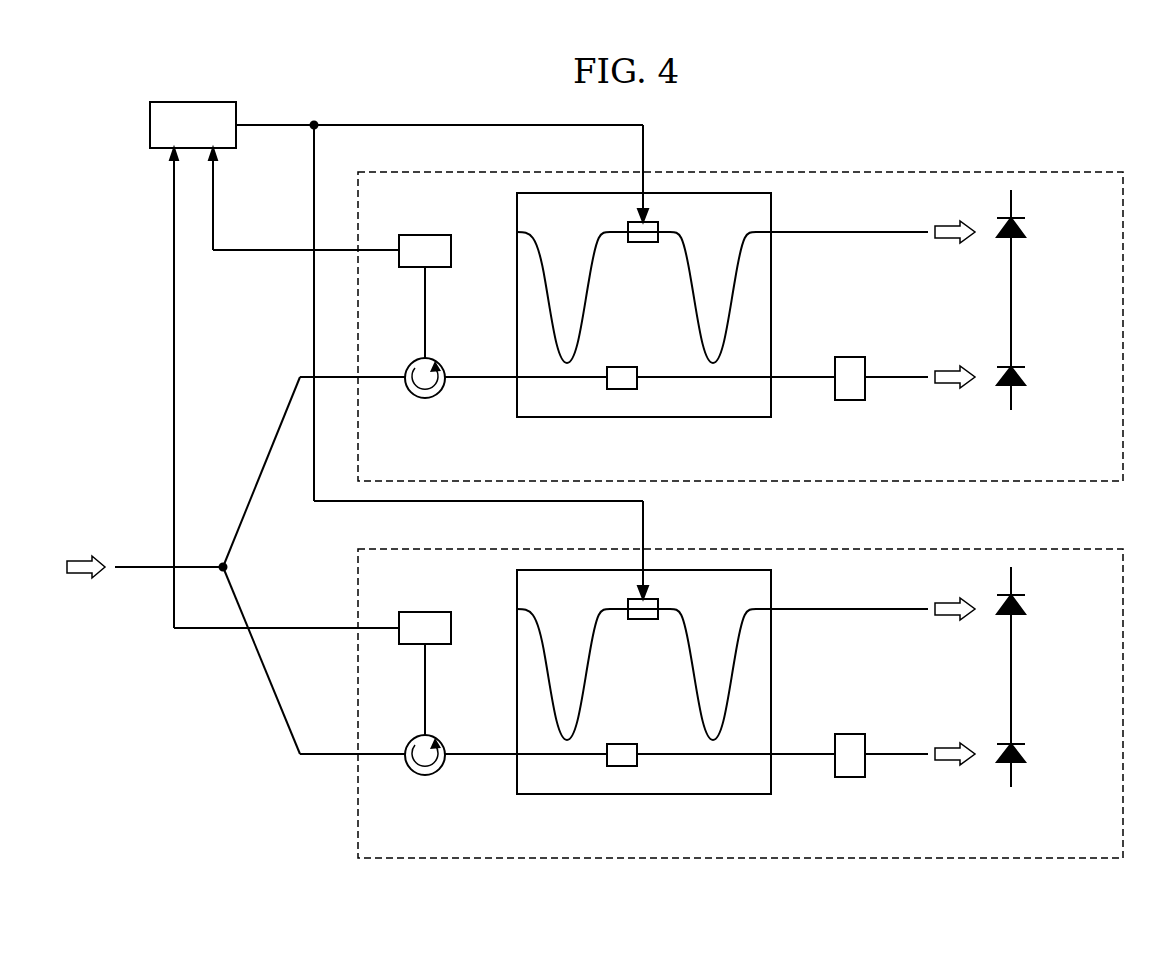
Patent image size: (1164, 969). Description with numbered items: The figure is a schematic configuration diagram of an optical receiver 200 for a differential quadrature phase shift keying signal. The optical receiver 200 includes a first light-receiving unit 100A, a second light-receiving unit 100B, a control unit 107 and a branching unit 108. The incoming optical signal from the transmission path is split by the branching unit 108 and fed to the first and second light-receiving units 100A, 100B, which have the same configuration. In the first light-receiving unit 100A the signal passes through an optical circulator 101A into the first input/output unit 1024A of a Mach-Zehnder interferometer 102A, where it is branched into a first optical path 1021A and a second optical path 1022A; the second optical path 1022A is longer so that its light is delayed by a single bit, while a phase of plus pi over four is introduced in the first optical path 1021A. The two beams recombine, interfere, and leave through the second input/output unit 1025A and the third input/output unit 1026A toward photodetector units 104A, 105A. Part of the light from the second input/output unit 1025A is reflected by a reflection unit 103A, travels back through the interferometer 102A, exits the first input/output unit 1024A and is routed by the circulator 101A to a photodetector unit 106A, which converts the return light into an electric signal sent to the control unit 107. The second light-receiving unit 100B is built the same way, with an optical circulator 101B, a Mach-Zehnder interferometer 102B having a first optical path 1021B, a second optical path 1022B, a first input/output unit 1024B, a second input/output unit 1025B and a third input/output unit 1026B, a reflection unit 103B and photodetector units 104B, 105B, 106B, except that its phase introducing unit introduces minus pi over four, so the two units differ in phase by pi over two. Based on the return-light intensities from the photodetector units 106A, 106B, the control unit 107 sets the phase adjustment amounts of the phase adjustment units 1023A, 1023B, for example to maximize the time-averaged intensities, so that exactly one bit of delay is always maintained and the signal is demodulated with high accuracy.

The optical receiver 200 is at (1087, 84).
The control unit 107 is at (210, 102).
The branching unit 108 is at (222, 572).
The first light-receiving unit 100A is at (1082, 172).
The second light-receiving unit 100B is at (752, 676).
The optical circulator 101A is at (440, 365).
The optical circulator 101B is at (461, 731).
The Mach-Zehnder interferometer 102A is at (650, 336).
The Mach-Zehnder interferometer 102B is at (650, 713).
The first optical path 1021A is at (637, 382).
The first optical path 1021B is at (663, 764).
The second optical path 1022A is at (690, 270).
The second optical path 1022B is at (644, 674).
The phase adjustment unit 1023A is at (658, 228).
The phase adjustment unit 1023B is at (687, 595).
The first input/output unit 1024A is at (528, 382).
The first input/output unit 1024B is at (562, 769).
The second input/output unit 1025A is at (752, 380).
The second input/output unit 1025B is at (710, 793).
The third input/output unit 1026A is at (772, 232).
The third input/output unit 1026B is at (849, 585).
The reflection unit 103A is at (850, 400).
The reflection unit 103B is at (857, 783).
The photodetector unit 104A is at (1027, 372).
The photodetector unit 104B is at (1050, 751).
The photodetector unit 105A is at (1027, 223).
The photodetector unit 105B is at (1050, 602).
The photodetector unit 106A is at (440, 235).
The photodetector unit 106B is at (442, 648).